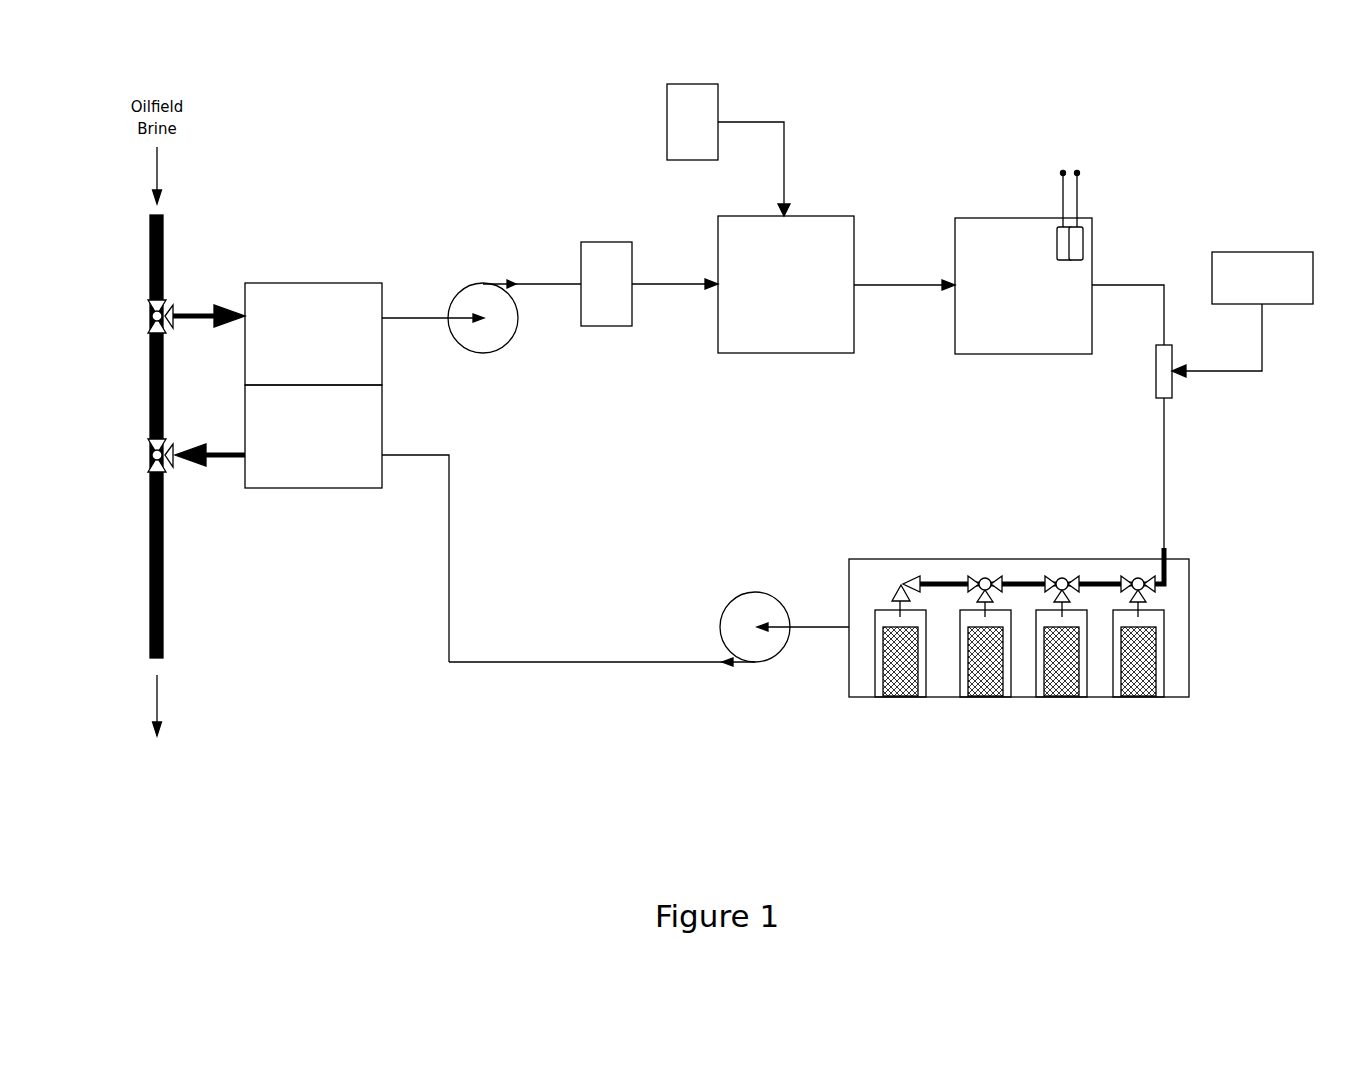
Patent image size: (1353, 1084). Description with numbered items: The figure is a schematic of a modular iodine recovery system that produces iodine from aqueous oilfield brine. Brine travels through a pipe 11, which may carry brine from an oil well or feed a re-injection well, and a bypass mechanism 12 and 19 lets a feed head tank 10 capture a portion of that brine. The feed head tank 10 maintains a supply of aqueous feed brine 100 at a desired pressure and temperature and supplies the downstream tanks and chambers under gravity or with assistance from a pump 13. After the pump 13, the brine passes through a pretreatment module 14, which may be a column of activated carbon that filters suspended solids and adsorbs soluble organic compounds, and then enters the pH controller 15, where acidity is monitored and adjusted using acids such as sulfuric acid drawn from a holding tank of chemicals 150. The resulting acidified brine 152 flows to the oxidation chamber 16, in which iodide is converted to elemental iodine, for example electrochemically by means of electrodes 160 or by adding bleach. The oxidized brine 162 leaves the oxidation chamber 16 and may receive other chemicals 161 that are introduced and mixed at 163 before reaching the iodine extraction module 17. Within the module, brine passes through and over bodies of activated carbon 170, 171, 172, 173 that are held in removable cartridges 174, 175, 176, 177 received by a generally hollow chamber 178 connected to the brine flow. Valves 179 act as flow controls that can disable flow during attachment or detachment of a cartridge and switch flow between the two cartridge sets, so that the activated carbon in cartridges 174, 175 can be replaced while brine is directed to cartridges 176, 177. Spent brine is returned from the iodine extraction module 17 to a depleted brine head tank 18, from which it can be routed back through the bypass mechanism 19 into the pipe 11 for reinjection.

The feed head tank 10 is at (300, 310).
The pipe 11 is at (150, 597).
The bypass mechanism 12 is at (152, 322).
The pump 13 is at (477, 333).
The pretreatment module 14 is at (607, 247).
The pH controller 15 is at (732, 232).
The oxidation chamber 16 is at (963, 230).
The iodine extraction module 17 is at (914, 518).
The depleted brine head tank 18 is at (300, 478).
The bypass mechanism 19 is at (152, 458).
The aqueous feed brine 100 is at (433, 309).
The chemicals holding tank 150 is at (670, 138).
The acidified brine 152 is at (904, 277).
The electrodes 160 is at (1083, 245).
The chemicals 161 is at (1257, 266).
The oxidized brine 162 is at (1128, 305).
The mixing point 163 is at (1159, 385).
The activated carbon 170 is at (900, 688).
The activated carbon 171 is at (985, 688).
The activated carbon 172 is at (1066, 688).
The activated carbon 173 is at (1142, 688).
The removable cartridge 174 is at (873, 667).
The removable cartridge 175 is at (960, 667).
The removable cartridge 176 is at (1035, 667).
The removable cartridge 177 is at (1112, 667).
The hollow chamber 178 is at (862, 583).
The valves 179 is at (903, 583).